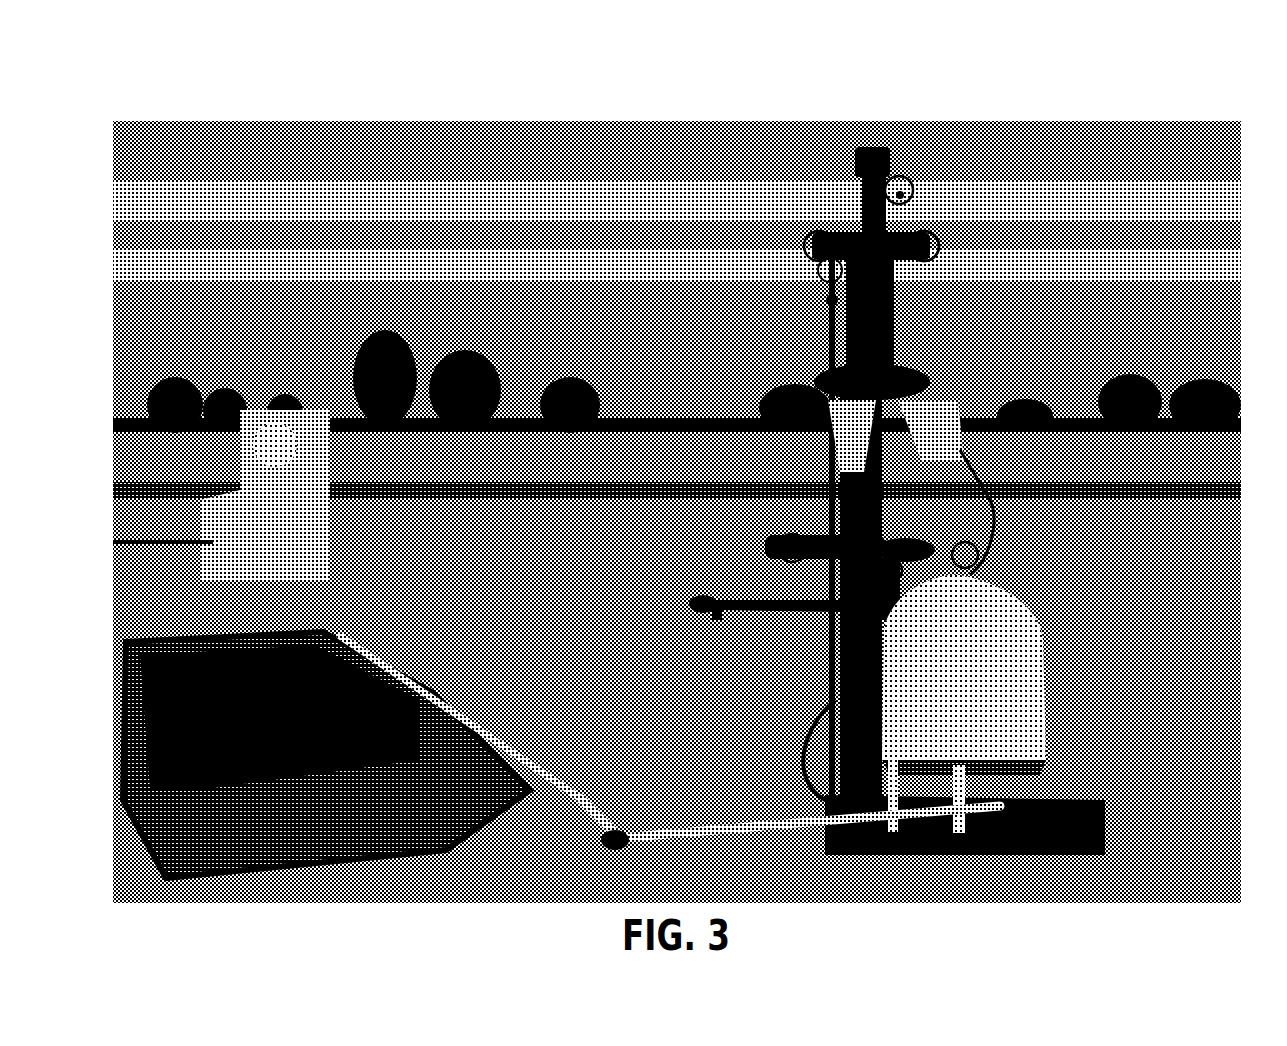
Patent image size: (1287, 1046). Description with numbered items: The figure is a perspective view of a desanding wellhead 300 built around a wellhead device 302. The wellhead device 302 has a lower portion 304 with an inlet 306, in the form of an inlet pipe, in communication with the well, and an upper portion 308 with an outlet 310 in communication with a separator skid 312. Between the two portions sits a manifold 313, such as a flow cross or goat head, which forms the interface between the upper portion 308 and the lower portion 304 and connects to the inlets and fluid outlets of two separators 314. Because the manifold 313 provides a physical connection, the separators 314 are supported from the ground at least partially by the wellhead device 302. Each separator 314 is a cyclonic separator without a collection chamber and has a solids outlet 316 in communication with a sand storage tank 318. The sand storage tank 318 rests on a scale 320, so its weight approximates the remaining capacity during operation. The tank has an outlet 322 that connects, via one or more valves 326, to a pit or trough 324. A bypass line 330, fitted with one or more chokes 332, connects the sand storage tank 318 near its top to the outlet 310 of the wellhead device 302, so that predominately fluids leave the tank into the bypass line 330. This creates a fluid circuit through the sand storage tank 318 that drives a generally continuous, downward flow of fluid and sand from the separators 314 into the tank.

The desanding wellhead 300 is at (393, 100).
The wellhead device 302 is at (862, 100).
The lower portion 304 is at (752, 687).
The inlet 306 is at (812, 748).
The upper portion 308 is at (764, 352).
The outlet 310 is at (824, 300).
The separator skid 312 is at (256, 385).
The manifold 313 is at (938, 262).
The separators 314 is at (932, 385).
The solids outlet 316 is at (968, 452).
The sand storage tank 318 is at (985, 560).
The scale 320 is at (1048, 740).
The outlet 322 is at (790, 826).
The pit or trough 324 is at (113, 637).
The valves 326 is at (590, 795).
The bypass line 330 is at (760, 552).
The chokes 332 is at (688, 604).